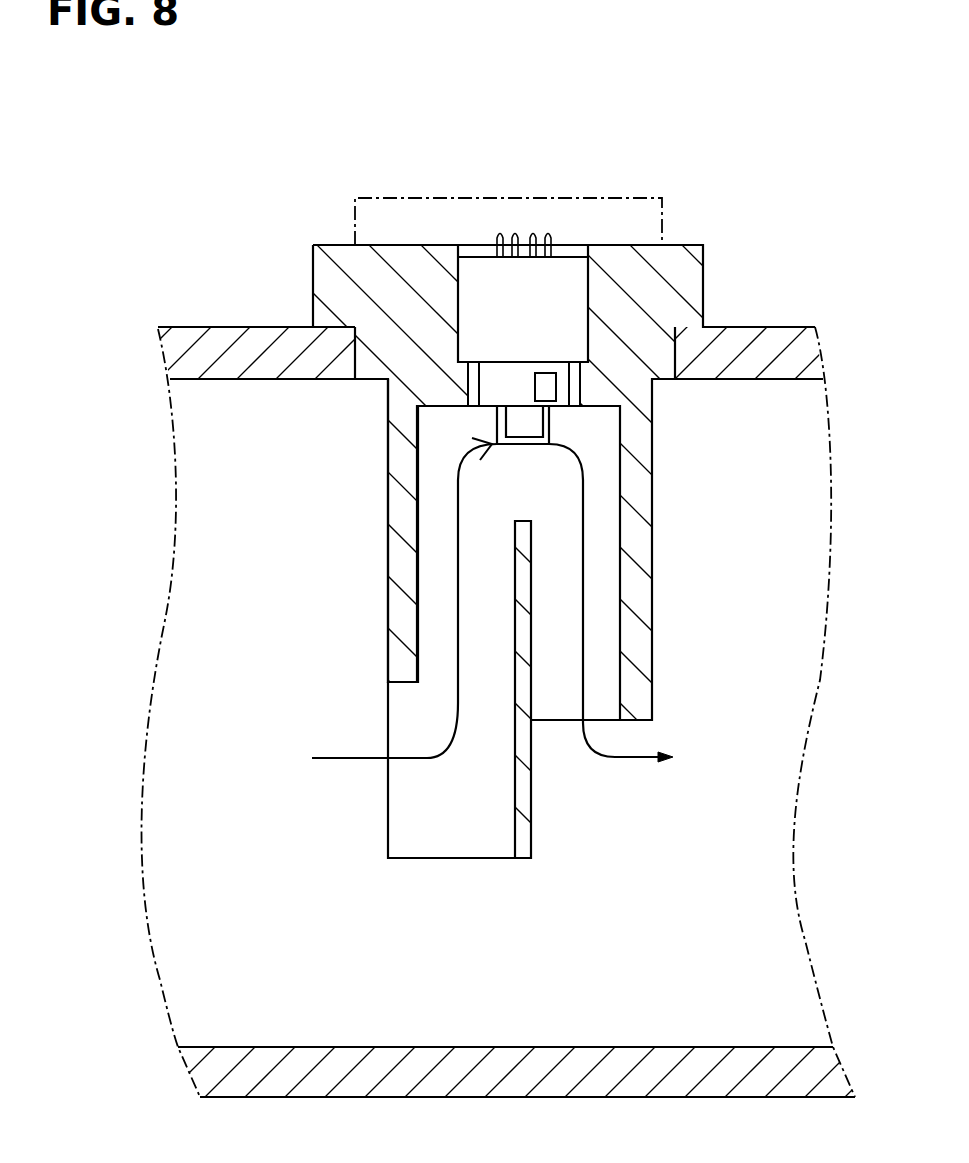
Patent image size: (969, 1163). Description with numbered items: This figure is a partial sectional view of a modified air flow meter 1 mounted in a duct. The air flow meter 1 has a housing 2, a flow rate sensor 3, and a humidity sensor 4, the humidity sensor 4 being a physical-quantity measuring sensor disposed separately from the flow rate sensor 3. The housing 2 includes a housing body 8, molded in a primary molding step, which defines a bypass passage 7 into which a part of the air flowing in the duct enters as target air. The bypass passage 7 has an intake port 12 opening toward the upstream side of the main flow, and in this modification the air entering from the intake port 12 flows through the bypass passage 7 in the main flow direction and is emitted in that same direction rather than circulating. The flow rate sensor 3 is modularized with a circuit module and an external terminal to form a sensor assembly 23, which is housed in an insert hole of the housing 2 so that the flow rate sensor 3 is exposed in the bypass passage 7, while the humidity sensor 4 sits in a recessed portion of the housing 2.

The air flow meter 1 is at (783, 108).
The housing 2 is at (685, 245).
The flow rate sensor 3 is at (525, 420).
The humidity sensor 4 is at (548, 383).
The bypass passage 7 is at (605, 483).
The housing body 8 is at (397, 543).
The intake port 12 is at (388, 800).
The sensor assembly 23 is at (468, 257).